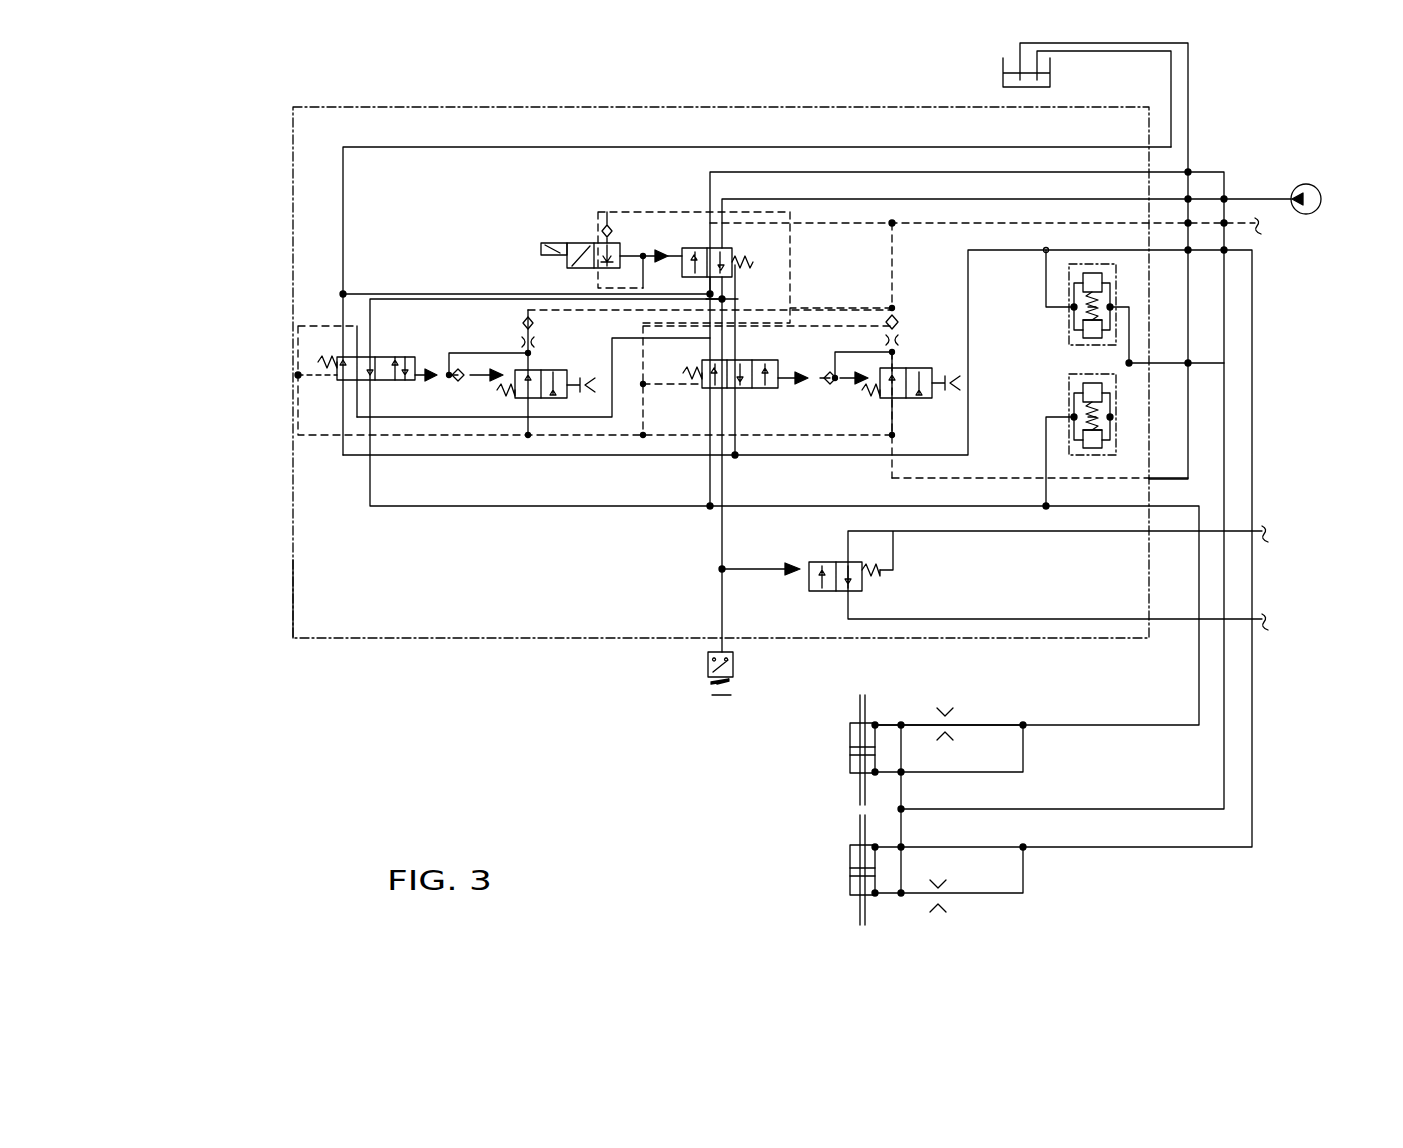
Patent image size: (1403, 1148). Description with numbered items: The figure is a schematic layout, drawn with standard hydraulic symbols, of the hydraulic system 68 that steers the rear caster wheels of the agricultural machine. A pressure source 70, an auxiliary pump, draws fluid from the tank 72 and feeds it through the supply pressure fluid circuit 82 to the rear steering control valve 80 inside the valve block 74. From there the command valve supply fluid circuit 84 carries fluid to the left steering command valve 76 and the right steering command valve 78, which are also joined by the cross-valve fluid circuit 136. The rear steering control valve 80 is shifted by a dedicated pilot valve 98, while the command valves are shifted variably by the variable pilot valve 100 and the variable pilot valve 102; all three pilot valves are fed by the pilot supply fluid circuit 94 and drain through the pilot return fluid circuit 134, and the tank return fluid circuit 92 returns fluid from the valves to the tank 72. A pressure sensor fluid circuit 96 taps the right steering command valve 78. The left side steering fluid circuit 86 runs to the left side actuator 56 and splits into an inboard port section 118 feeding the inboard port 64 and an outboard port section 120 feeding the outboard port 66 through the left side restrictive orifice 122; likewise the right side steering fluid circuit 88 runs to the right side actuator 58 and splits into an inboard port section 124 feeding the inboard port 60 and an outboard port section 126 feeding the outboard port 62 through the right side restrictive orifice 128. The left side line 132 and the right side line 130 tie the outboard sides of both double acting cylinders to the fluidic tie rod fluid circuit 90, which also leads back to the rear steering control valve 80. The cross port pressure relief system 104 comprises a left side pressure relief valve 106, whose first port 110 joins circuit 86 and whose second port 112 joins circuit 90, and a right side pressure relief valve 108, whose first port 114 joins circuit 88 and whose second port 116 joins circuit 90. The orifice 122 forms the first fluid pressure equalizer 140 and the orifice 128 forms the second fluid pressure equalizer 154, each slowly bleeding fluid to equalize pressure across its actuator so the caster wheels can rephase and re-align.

The left side actuator 56 is at (850, 888).
The right side actuator 58 is at (850, 737).
The inboard port 60 is at (880, 770).
The outboard port 62 is at (878, 720).
The inboard port 64 is at (880, 852).
The outboard port 66 is at (876, 895).
The hydraulic system 68 is at (447, 97).
The pressure source 70 is at (1315, 188).
The tank 72 is at (1003, 67).
The valve block 74 is at (293, 588).
The left steering command valve 76 is at (390, 382).
The right steering command valve 78 is at (780, 365).
The rear steering control valve 80 is at (705, 246).
The supply pressure fluid circuit 82 is at (848, 199).
The command valve supply fluid circuit 84 is at (735, 295).
The left side steering fluid circuit 86 is at (438, 456).
The right side steering fluid circuit 88 is at (748, 508).
The fluidic tie rod fluid circuit 90 is at (745, 172).
The tank return fluid circuit 92 is at (405, 147).
The pilot supply fluid circuit 94 is at (912, 226).
The pressure sensor fluid circuit 96 is at (718, 542).
The pilot valve 98 is at (570, 243).
The variable pilot valve 100 is at (530, 370).
The variable pilot valve 102 is at (910, 398).
The cross port pressure relief system 104 is at (1125, 292).
The left side pressure relief valve 106 is at (1060, 330).
The right side pressure relief valve 108 is at (1110, 450).
The first port 110 is at (1073, 307).
The second port 112 is at (1113, 307).
The first port 114 is at (1075, 415).
The second port 116 is at (1113, 417).
The inboard port section 118 is at (995, 847).
The outboard port section 120 is at (1015, 893).
The left side restrictive orifice 122 is at (945, 900).
The inboard port section 124 is at (995, 773).
The outboard port section 126 is at (1000, 723).
The right side restrictive orifice 128 is at (960, 718).
The right side line 130 is at (901, 770).
The left side line 132 is at (901, 850).
The pilot return fluid circuit 134 is at (596, 437).
The cross-valve fluid circuit 136 is at (548, 418).
The first fluid pressure equalizer 140 is at (938, 918).
The second fluid pressure equalizer 154 is at (945, 702).